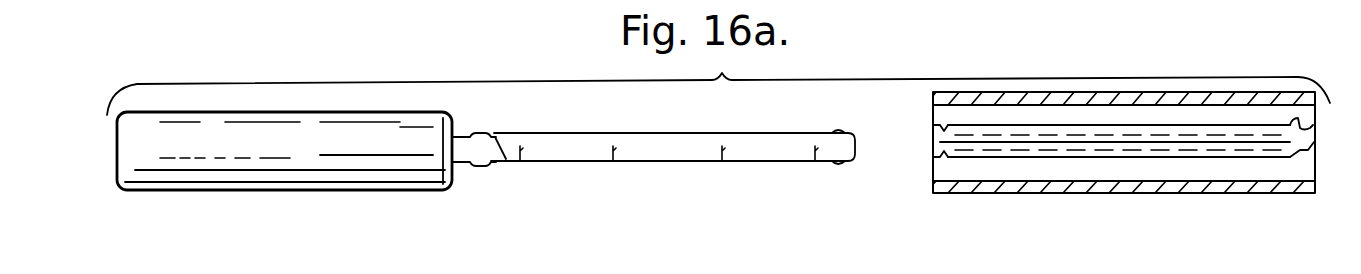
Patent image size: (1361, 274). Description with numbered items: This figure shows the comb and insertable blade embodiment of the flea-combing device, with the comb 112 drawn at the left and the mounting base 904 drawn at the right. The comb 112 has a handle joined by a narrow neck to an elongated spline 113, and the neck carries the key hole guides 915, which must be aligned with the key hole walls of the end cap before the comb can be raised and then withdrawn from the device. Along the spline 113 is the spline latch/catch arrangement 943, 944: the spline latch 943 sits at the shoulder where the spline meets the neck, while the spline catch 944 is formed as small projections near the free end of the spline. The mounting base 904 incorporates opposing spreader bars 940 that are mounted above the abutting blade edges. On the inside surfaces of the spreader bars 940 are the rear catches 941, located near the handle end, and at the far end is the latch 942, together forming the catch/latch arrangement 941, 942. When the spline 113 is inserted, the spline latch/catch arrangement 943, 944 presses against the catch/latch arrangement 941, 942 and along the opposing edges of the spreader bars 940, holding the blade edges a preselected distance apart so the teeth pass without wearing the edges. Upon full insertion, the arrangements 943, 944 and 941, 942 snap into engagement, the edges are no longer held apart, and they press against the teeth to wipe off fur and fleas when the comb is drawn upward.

The comb 112 is at (302, 151).
The spline 113 is at (668, 158).
The key hole guides 915 is at (472, 133).
The spline latch 943 is at (488, 165).
The spline catch 944 is at (840, 130).
The mounting base 904 is at (1127, 193).
The spreader bars 940 is at (1120, 115).
The rear catches 941 is at (946, 124).
The latch 942 is at (1287, 125).